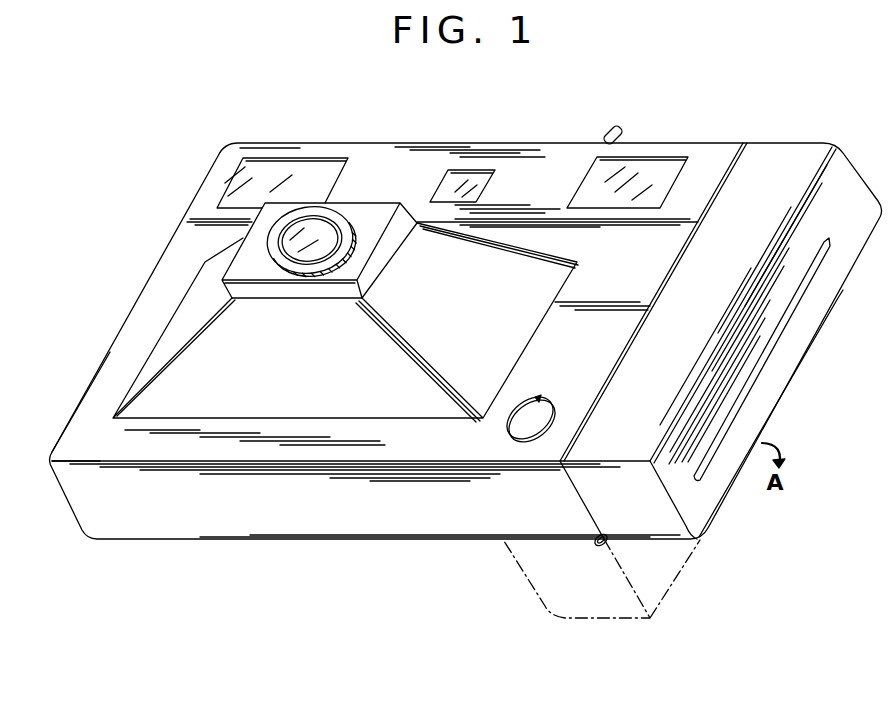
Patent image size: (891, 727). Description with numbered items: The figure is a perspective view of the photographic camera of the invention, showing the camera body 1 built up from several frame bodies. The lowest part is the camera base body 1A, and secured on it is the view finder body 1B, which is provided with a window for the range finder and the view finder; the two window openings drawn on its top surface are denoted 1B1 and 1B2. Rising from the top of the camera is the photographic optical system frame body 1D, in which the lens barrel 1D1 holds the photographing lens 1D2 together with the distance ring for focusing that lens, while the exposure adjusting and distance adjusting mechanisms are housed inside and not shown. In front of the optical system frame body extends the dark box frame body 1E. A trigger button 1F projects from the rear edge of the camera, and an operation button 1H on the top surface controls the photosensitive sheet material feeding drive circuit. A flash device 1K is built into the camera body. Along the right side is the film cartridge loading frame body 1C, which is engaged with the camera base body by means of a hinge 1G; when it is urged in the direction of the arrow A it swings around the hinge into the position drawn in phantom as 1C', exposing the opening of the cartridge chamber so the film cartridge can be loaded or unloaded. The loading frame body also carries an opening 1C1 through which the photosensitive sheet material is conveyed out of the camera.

The camera body 1 is at (554, 350).
The camera base body 1A is at (90, 391).
The view finder body 1B is at (382, 153).
The first window 1B1 is at (472, 178).
The second window 1B2 is at (665, 168).
The film cartridge loading frame body 1C is at (701, 320).
The opening 1C1 is at (697, 478).
The rotated position of the film cartridge loading frame body 1C' is at (602, 597).
The photographic optical system frame body 1D is at (280, 210).
The lens barrel 1D1 is at (340, 213).
The photographing lens 1D2 is at (315, 223).
The dark box frame body 1E is at (411, 406).
The trigger button 1F is at (612, 126).
The hinge 1G is at (602, 543).
The operation button 1H is at (515, 425).
The flash device 1K is at (257, 163).